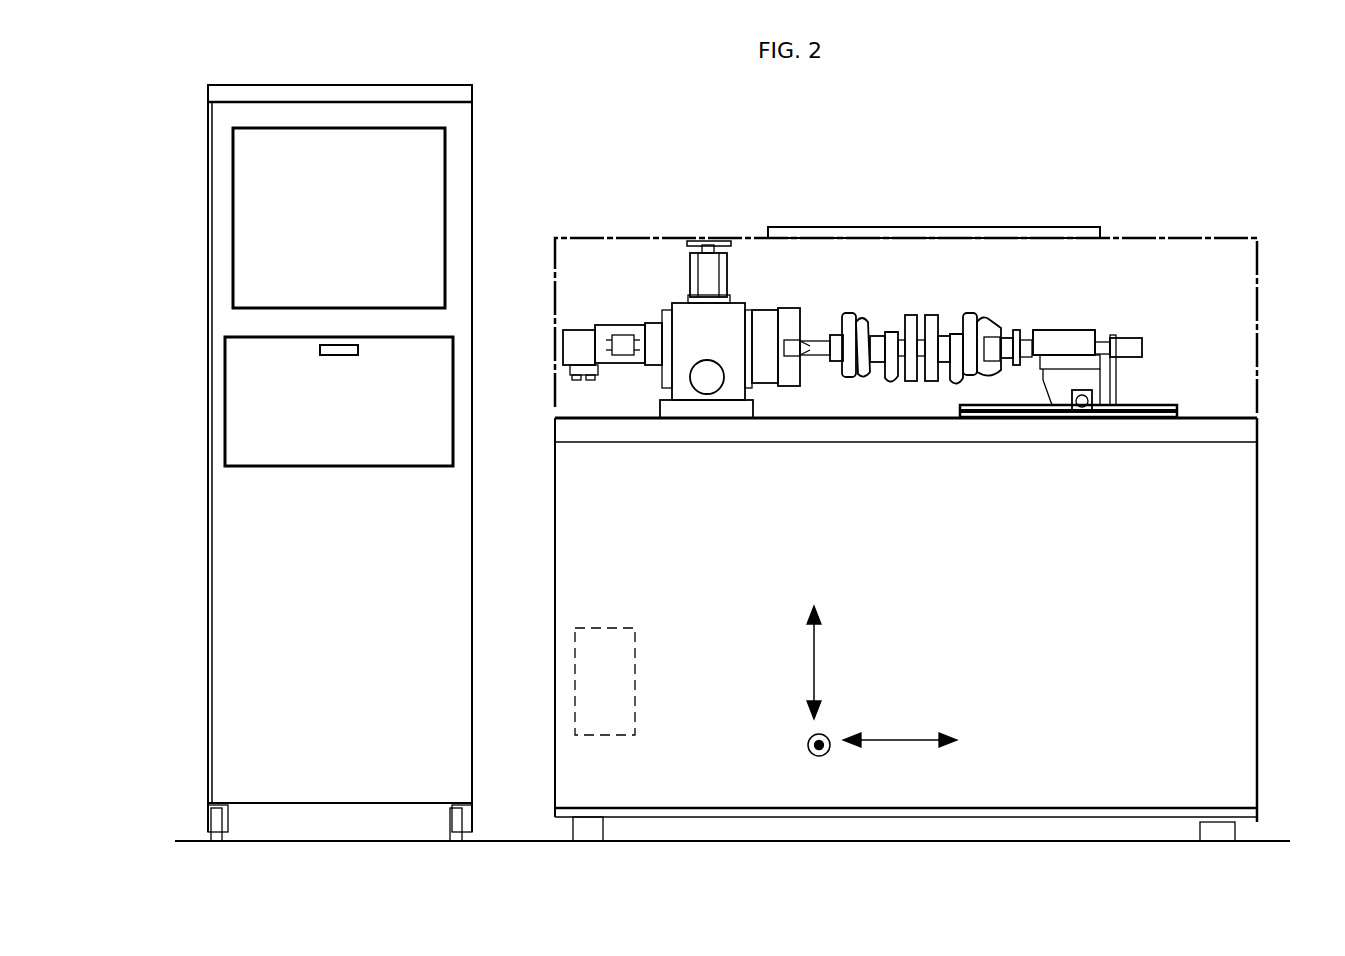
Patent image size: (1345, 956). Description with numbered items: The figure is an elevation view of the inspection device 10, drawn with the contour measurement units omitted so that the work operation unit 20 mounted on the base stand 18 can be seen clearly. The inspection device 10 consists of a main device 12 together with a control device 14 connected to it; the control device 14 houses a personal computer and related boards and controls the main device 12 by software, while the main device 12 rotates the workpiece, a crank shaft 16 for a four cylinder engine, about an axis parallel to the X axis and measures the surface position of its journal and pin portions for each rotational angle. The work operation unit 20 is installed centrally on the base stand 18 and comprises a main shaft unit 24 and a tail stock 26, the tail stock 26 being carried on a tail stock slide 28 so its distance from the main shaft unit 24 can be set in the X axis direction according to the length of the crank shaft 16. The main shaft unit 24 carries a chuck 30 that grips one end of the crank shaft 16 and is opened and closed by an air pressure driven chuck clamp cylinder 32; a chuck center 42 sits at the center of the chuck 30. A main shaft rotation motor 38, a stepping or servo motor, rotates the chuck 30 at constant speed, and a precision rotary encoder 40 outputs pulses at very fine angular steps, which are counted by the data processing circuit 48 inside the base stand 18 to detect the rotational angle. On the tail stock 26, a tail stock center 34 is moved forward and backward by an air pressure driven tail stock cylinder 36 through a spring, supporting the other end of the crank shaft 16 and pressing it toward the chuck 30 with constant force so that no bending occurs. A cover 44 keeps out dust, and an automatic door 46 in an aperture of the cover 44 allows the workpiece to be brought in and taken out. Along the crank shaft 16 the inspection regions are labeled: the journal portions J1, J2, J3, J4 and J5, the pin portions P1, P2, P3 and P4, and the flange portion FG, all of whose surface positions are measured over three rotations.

The inspection device 10 is at (636, 100).
The main device 12 is at (916, 489).
The control device 14 is at (480, 182).
The crank shaft 16 is at (911, 389).
The base stand 18 is at (1245, 535).
The work operation unit 20 is at (1135, 283).
The main shaft unit 24 is at (732, 305).
The tail stock 26 is at (1057, 332).
The tail stock slide 28 is at (1145, 407).
The chuck 30 is at (790, 312).
The chuck clamp cylinder 32 is at (580, 332).
The tail stock center 34 is at (1040, 330).
The tail stock cylinder 36 is at (1122, 338).
The main shaft rotation motor 38 is at (688, 266).
The precision rotary encoder 40 is at (652, 322).
The chuck center 42 is at (822, 335).
The cover 44 is at (1160, 238).
The automatic door 46 is at (950, 232).
The data processing circuit 48 is at (605, 681).
The journal portion J1 is at (835, 372).
The journal portion J2 is at (880, 372).
The journal portion J3 is at (922, 372).
The journal portion J4 is at (962, 372).
The journal portion J5 is at (1003, 372).
The pin portion P1 is at (852, 372).
The pin portion P2 is at (900, 372).
The pin portion P3 is at (946, 372).
The pin portion P4 is at (985, 314).
The flange portion FG is at (1018, 372).